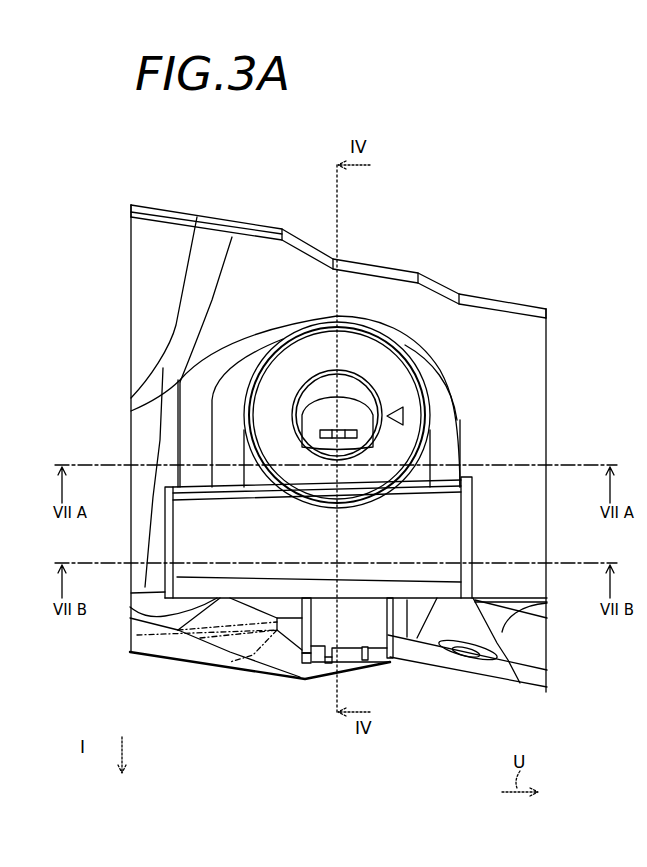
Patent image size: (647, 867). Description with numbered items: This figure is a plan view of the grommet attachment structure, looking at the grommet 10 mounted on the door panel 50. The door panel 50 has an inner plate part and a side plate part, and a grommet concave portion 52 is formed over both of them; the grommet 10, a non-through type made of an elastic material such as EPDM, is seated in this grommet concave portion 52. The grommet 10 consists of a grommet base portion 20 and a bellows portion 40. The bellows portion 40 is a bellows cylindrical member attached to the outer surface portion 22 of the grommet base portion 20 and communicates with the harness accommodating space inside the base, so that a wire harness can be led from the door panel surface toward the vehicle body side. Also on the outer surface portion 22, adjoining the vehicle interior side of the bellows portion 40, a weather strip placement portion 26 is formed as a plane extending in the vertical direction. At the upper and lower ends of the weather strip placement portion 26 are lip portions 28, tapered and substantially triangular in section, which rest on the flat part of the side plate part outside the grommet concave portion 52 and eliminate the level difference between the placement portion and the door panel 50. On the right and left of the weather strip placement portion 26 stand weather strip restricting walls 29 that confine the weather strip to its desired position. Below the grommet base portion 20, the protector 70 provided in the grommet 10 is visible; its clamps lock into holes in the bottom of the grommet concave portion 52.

The grommet 10 is at (530, 223).
The grommet base portion 20 is at (443, 410).
The outer surface portion 22 is at (208, 387).
The weather strip placement portion 26 is at (225, 532).
The lip portion 28 is at (150, 530).
The weather strip restricting wall 29 is at (207, 485).
The bellows portion 40 is at (360, 355).
The door panel 50 is at (247, 292).
The grommet concave portion 52 is at (459, 440).
The protector 70 is at (367, 627).